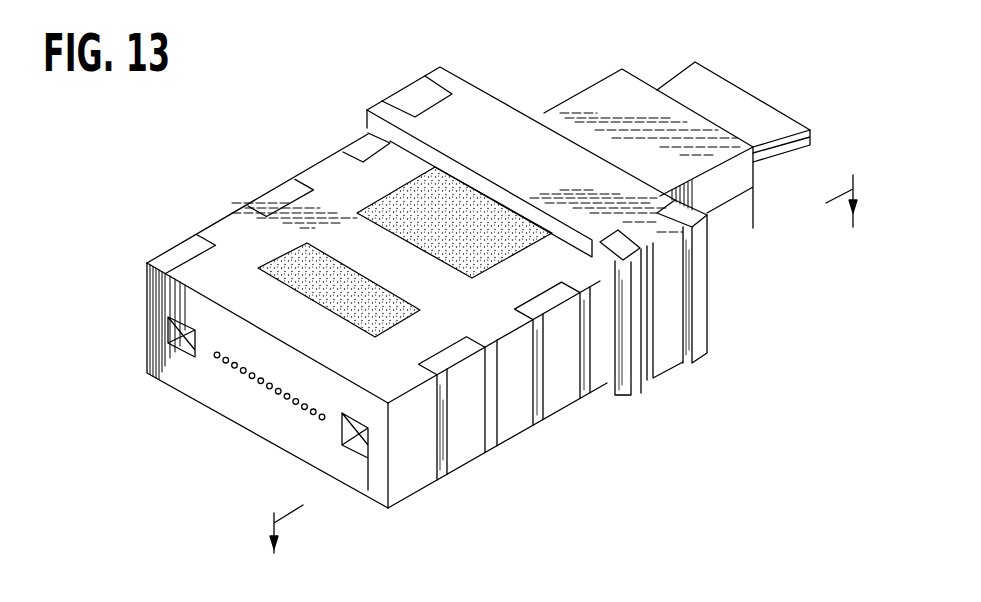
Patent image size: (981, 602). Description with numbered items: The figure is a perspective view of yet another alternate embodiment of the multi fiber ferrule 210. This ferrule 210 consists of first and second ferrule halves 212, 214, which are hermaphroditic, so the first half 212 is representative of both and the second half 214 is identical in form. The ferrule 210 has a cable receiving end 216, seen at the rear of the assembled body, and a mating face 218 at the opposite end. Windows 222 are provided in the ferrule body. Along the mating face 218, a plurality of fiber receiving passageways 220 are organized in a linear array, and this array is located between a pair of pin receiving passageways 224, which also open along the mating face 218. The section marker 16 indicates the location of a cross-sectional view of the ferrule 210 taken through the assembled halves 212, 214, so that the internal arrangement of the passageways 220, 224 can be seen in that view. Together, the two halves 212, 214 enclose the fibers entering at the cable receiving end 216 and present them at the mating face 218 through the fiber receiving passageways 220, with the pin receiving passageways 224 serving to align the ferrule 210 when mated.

The multi fiber ferrule 210 is at (377, 96).
The first ferrule half 212 is at (560, 398).
The second ferrule half 214 is at (322, 178).
The cable receiving end 216 is at (640, 74).
The mating face 218 is at (190, 375).
The fiber receiving passageways 220 is at (281, 393).
The windows 222 is at (273, 260).
The pin receiving passageways 224 is at (168, 333).
The section line 16 is at (563, 384).